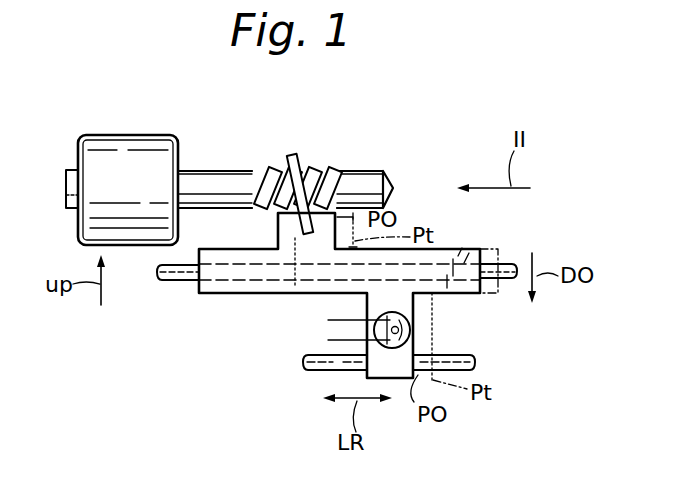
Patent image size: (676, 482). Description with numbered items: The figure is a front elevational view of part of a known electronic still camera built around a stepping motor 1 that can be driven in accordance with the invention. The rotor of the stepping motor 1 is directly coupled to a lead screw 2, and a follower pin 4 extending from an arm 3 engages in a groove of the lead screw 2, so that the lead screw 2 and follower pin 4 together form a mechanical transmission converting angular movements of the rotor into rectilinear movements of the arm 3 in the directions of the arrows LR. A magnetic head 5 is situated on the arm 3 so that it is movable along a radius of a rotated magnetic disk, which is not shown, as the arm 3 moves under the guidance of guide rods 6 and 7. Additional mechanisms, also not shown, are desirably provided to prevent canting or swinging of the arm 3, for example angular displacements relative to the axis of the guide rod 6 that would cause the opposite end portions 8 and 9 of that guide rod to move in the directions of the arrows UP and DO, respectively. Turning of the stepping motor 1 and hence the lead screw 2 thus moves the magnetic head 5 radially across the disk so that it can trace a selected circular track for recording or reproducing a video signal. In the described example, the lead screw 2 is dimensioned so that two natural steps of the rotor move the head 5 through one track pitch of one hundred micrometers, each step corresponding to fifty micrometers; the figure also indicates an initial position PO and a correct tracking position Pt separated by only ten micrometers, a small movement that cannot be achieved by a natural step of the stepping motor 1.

The stepping motor 1 is at (104, 132).
The lead screw 2 is at (218, 169).
The arm 3 is at (470, 256).
The follower pin 4 is at (295, 160).
The magnetic head 5 is at (403, 333).
The guide rod 6 is at (175, 282).
The guide rod 7 is at (305, 370).
The end portion of the guide rod 8 is at (248, 295).
The end portion of the guide rod 9 is at (448, 248).